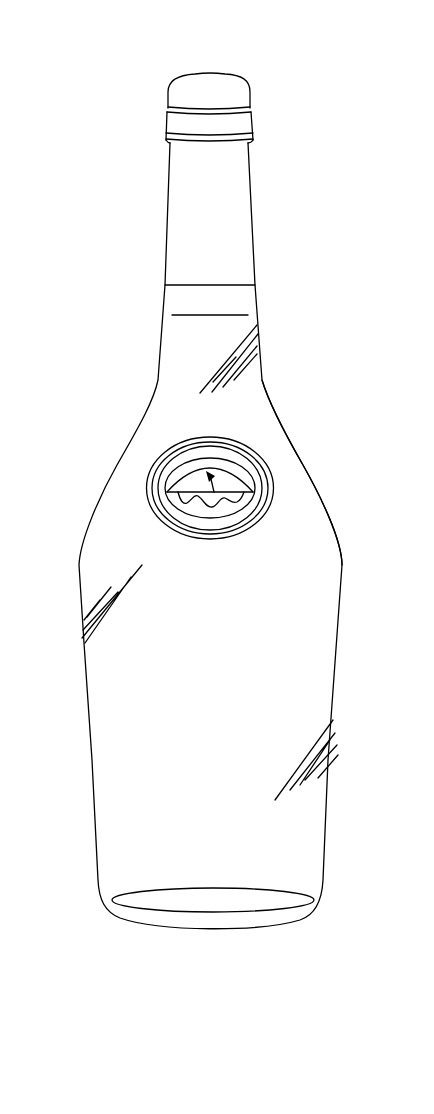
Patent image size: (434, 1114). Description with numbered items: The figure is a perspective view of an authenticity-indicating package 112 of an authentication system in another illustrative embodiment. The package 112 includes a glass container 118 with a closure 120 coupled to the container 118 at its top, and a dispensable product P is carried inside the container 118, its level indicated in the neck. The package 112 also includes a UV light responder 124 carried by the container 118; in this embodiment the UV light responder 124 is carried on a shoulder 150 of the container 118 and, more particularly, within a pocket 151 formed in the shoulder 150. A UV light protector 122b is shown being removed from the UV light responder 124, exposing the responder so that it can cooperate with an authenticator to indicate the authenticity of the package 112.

The authenticity-indicating package 112 is at (84, 74).
The glass container 118 is at (69, 708).
The closure 120 is at (158, 86).
The UV light protector 122b is at (237, 446).
The UV light responder 124 is at (170, 508).
The shoulder 150 is at (305, 471).
The pocket 151 is at (160, 462).
The dispensable product P is at (213, 315).